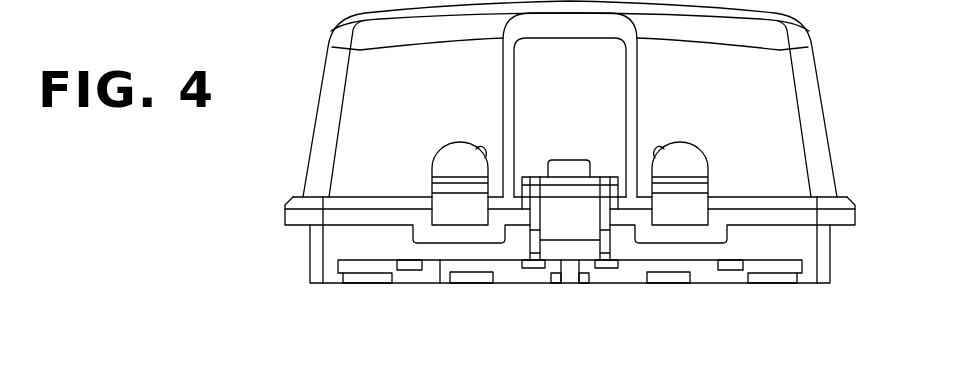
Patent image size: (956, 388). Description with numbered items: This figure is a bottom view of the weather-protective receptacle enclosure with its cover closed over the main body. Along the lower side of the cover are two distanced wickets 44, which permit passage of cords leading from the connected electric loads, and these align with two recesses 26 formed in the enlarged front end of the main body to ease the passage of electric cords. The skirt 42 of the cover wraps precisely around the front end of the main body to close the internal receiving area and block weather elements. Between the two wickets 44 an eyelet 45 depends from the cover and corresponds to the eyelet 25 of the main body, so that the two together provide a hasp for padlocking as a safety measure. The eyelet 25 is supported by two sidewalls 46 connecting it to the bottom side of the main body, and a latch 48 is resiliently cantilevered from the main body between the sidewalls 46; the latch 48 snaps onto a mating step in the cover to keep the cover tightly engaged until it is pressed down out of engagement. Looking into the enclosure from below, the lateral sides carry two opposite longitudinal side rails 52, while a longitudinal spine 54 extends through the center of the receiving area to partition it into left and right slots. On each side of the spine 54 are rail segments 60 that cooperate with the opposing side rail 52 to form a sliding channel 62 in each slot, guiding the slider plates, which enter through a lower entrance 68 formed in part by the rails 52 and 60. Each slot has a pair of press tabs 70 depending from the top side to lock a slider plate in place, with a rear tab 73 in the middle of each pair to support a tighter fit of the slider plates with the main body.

The eyelet 25 is at (605, 193).
The recess 26 is at (460, 225).
The skirt 42 is at (285, 211).
The wicket 44 is at (476, 150).
The eyelet 45 is at (550, 193).
The sidewall 46 is at (607, 227).
The latch 48 is at (572, 160).
The side rail 52 is at (370, 280).
The spine 54 is at (567, 280).
The rail segment 60 is at (553, 278).
The sliding channel 62 is at (340, 263).
The lower entrance 68 is at (440, 262).
The press tab 70 is at (408, 268).
The rear tab 73 is at (472, 280).